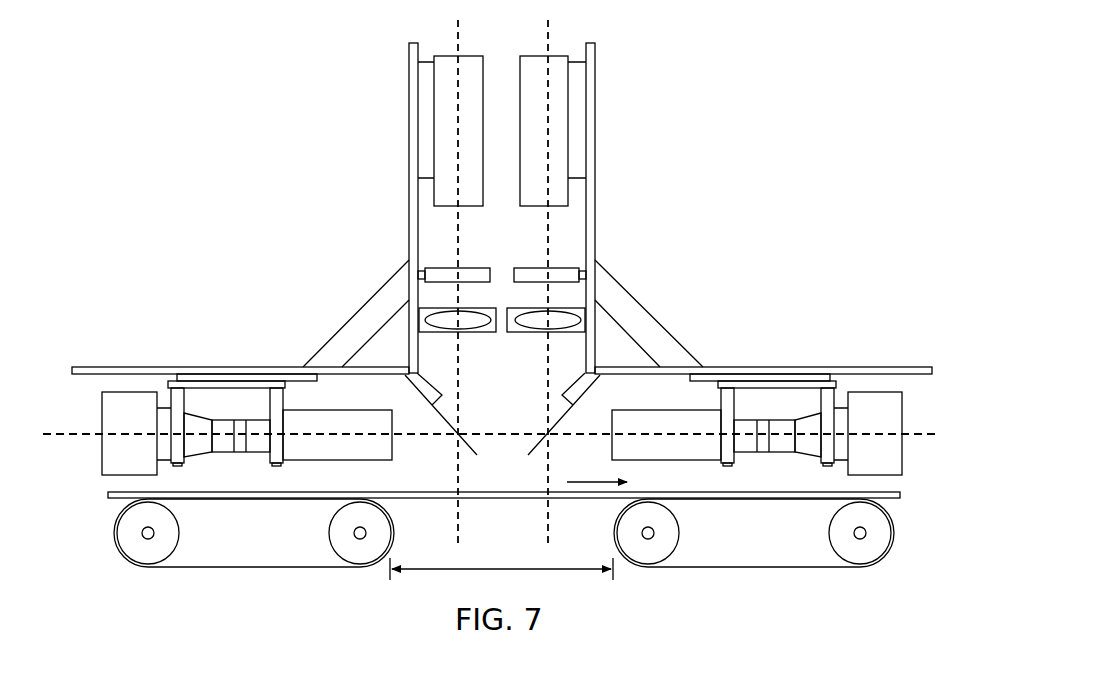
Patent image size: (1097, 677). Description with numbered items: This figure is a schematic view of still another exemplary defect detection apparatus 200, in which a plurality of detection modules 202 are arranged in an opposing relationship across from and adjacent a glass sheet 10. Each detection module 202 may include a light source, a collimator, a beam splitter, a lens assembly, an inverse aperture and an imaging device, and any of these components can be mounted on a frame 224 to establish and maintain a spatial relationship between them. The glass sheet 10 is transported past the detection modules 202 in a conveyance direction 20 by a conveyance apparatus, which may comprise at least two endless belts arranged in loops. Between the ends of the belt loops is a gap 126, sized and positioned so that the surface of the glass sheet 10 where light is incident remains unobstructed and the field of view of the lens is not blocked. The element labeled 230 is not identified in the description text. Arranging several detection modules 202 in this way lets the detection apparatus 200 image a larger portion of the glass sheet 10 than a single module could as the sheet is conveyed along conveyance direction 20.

The glass sheet 10 is at (910, 493).
The conveyance direction 20 is at (597, 468).
The gap 126 is at (501, 564).
The detection apparatus 200 is at (631, 96).
The detection module 202 is at (323, 220).
The frame 224 is at (452, 37).
The roller axis line 230 is at (918, 432).